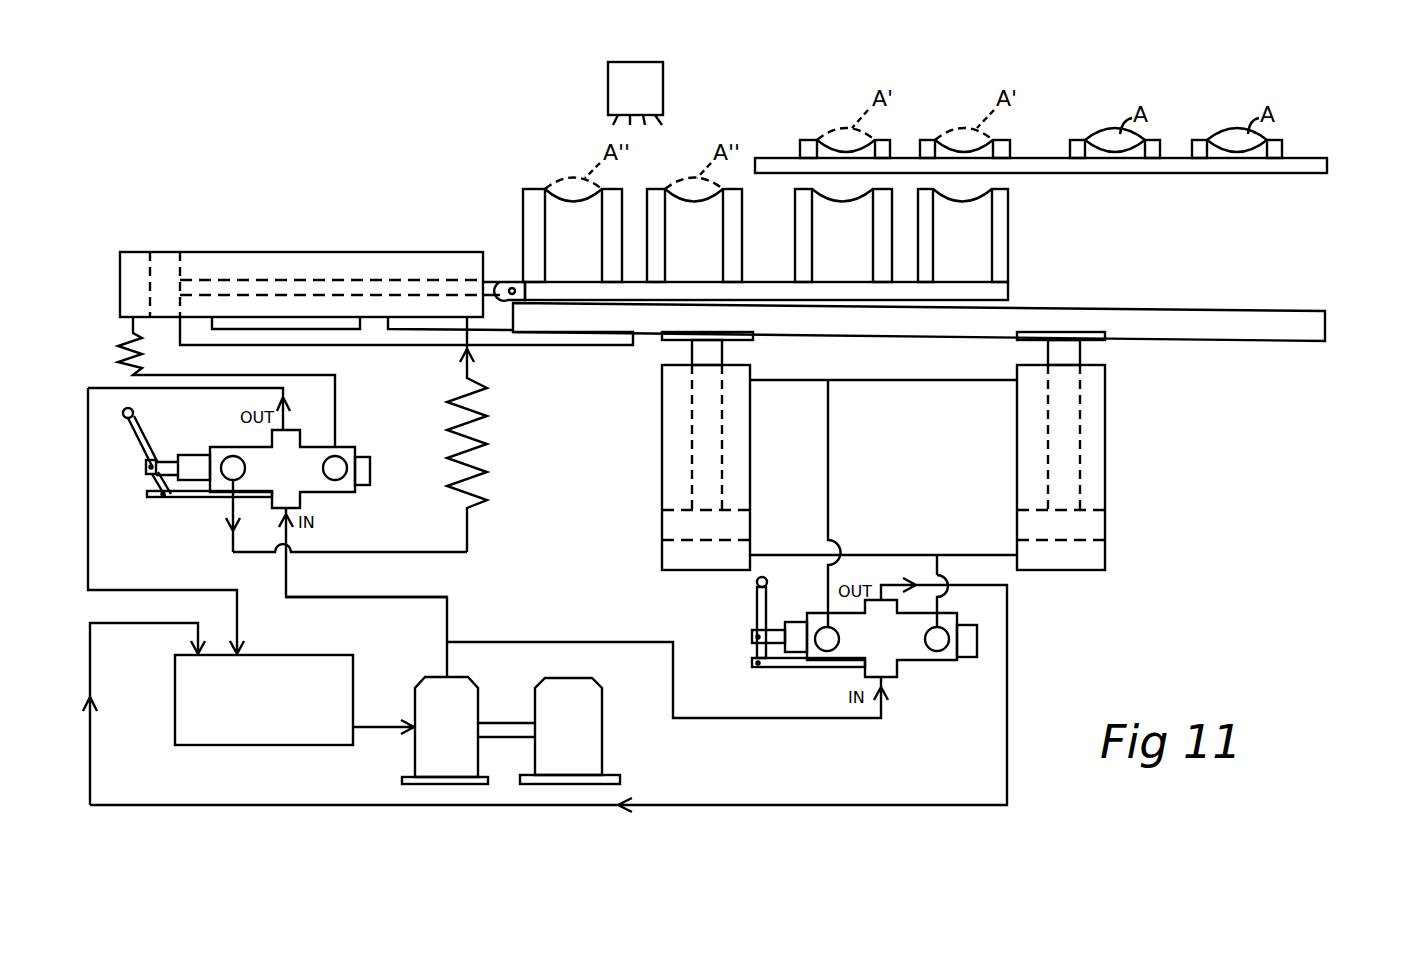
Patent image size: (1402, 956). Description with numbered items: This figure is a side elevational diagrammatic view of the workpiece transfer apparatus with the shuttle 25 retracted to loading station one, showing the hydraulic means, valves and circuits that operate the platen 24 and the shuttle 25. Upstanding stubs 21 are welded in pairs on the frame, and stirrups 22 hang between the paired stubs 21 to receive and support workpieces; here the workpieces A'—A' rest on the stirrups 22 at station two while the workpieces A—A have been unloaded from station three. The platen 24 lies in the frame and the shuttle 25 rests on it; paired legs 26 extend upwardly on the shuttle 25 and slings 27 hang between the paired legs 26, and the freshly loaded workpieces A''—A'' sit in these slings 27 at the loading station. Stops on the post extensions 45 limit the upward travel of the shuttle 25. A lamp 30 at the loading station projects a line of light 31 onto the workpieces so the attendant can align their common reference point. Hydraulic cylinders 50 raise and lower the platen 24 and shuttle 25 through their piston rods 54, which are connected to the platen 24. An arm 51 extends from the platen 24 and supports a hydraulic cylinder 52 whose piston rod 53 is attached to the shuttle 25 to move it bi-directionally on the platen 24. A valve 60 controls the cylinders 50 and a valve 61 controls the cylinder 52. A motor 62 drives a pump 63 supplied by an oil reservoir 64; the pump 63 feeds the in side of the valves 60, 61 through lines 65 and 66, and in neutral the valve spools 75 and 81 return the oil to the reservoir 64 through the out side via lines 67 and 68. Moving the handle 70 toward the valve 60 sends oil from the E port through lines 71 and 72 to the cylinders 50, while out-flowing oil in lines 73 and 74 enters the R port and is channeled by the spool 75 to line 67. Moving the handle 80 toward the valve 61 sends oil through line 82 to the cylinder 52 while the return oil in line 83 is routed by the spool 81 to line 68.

The lamp 30 is at (658, 86).
The line of light 31 is at (612, 120).
The post extensions 45 is at (1030, 157).
The paired legs 26 is at (1282, 153).
The slings 27 is at (1176, 142).
The stubs 21 is at (1010, 233).
The stirrups 22 is at (843, 201).
The shuttle 25 is at (1010, 299).
The platen 24 is at (1328, 334).
The hydraulic cylinder 52 is at (133, 260).
The piston rod 53 is at (497, 283).
The arm 51 is at (402, 346).
The line 83 is at (492, 453).
The line 82 is at (123, 353).
The line 68 is at (89, 490).
The valve 61 is at (338, 496).
The valve spool 81 is at (189, 457).
The handle 80 is at (133, 410).
The line 66 is at (347, 597).
The line 65 is at (752, 720).
The oil reservoir 64 is at (268, 743).
The pump 63 is at (414, 758).
The motor 62 is at (600, 729).
The line 67 is at (88, 761).
The hydraulic cylinders 50 is at (662, 453).
The piston rods 54 is at (723, 356).
The line 74 is at (931, 382).
The line 73 is at (830, 463).
The line 72 is at (888, 553).
The line 71 is at (948, 581).
The valve 60 is at (905, 663).
The valve spool 75 is at (964, 657).
The handle 70 is at (768, 581).